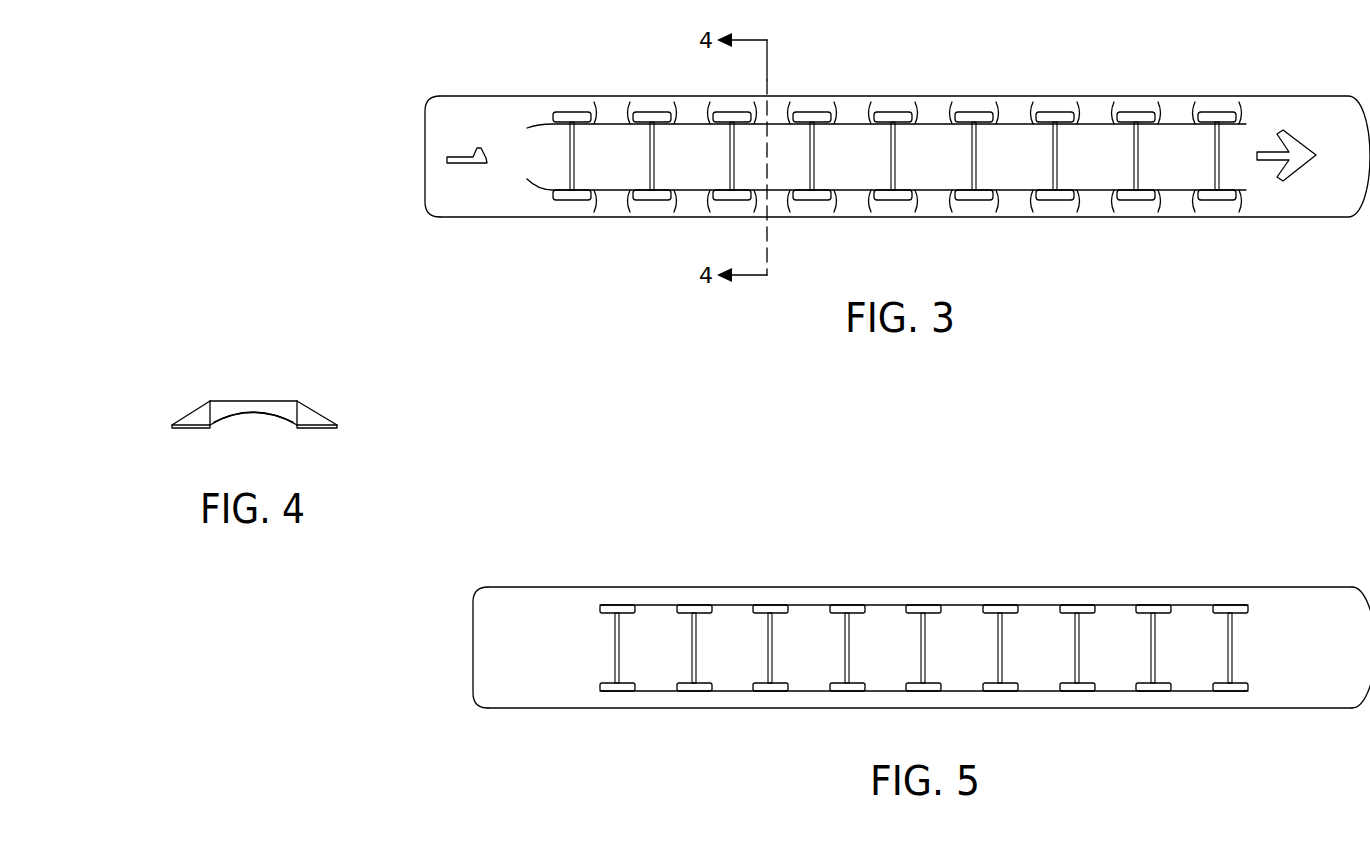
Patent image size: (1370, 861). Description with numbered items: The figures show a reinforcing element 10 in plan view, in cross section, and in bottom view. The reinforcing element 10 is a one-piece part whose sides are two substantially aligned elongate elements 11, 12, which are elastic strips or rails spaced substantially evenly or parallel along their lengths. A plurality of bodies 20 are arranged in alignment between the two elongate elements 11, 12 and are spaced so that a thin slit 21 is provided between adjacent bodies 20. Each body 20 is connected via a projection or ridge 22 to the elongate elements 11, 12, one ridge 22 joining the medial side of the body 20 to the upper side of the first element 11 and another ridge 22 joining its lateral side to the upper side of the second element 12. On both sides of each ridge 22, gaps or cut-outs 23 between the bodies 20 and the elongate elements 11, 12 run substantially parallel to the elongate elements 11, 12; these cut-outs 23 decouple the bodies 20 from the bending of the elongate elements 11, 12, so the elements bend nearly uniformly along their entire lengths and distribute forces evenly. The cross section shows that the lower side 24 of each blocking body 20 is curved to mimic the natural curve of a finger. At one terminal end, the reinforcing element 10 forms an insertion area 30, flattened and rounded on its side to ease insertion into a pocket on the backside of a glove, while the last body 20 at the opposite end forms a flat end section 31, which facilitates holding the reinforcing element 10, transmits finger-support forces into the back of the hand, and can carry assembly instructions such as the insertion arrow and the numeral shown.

In FIG. 3, the reinforcing element 10 is at (1110, 60).
In FIG. 4, the reinforcing element 10 is at (386, 428).
In FIG. 5, the reinforcing element 10 is at (1260, 545).
In FIG. 3, the first elongate element 11 is at (973, 108).
In FIG. 4, the first elongate element 11 is at (315, 429).
In FIG. 5, the first elongate element 11 is at (1043, 697).
In FIG. 3, the second elongate element 12 is at (734, 205).
In FIG. 4, the second elongate element 12 is at (186, 429).
In FIG. 5, the second elongate element 12 is at (975, 596).
In FIG. 3, the body 20 is at (851, 180).
In FIG. 4, the body 20 is at (236, 406).
In FIG. 3, the slit 21 is at (815, 150).
In FIG. 5, the slit 21 is at (923, 648).
In FIG. 3, the ridge 22 is at (851, 108).
In FIG. 4, the ridge 22 is at (308, 413).
In FIG. 3, the cut-out 23 is at (802, 201).
In FIG. 5, the cut-out 23 is at (910, 692).
In FIG. 4, the lower side 24 is at (260, 422).
In FIG. 5, the lower side 24 is at (880, 633).
In FIG. 3, the insertion area 30 is at (1324, 212).
In FIG. 5, the insertion area 30 is at (1302, 690).
In FIG. 3, the flat end section 31 is at (472, 212).
In FIG. 5, the flat end section 31 is at (542, 692).